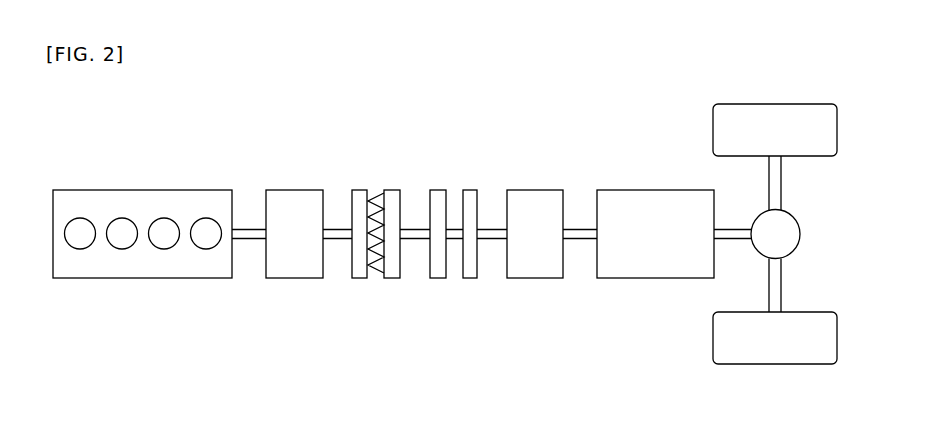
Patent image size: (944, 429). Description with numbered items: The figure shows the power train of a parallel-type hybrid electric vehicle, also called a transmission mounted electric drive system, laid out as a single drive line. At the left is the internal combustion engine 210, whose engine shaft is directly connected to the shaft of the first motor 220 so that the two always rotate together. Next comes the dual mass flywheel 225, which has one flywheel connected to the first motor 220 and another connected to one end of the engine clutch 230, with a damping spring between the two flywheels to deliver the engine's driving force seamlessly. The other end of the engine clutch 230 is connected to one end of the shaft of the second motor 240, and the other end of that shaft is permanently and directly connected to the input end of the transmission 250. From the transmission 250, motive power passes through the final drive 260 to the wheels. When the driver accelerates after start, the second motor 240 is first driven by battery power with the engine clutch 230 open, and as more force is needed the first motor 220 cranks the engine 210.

The internal combustion engine 210 is at (135, 190).
The first motor 220 is at (294, 190).
The dual mass flywheel 225 is at (390, 190).
The engine clutch 230 is at (470, 190).
The second motor 240 is at (531, 190).
The transmission 250 is at (642, 190).
The final drive 260 is at (797, 219).